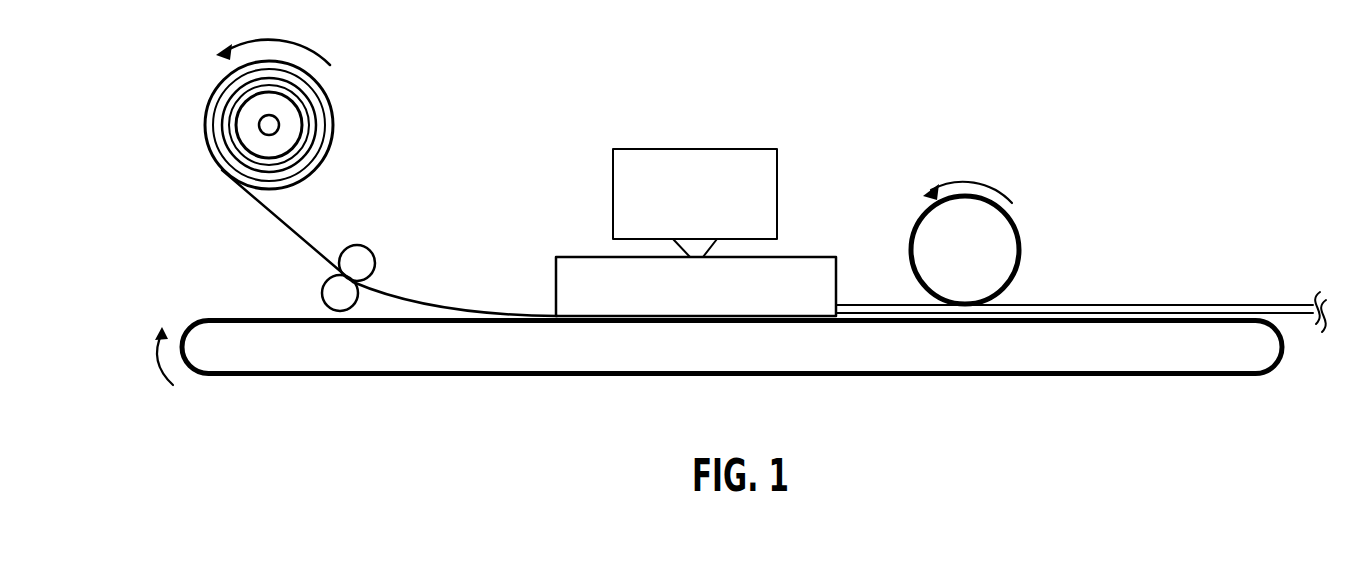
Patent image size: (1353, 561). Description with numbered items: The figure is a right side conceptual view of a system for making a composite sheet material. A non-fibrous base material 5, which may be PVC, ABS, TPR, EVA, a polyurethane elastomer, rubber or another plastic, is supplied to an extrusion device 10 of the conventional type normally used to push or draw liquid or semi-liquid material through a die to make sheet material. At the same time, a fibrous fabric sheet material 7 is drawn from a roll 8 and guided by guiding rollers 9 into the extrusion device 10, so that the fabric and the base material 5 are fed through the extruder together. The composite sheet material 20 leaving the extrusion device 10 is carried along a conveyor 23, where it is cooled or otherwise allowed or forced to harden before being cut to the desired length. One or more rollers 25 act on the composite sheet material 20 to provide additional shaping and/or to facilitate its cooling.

The base material 5 is at (779, 202).
The fabric sheet material 7 is at (288, 232).
The roll 8 is at (334, 124).
The guiding rollers 9 is at (374, 262).
The extrusion device 10 is at (556, 287).
The composite sheet material 20 is at (1228, 304).
The conveyor 23 is at (1000, 347).
The rollers 25 is at (1020, 250).